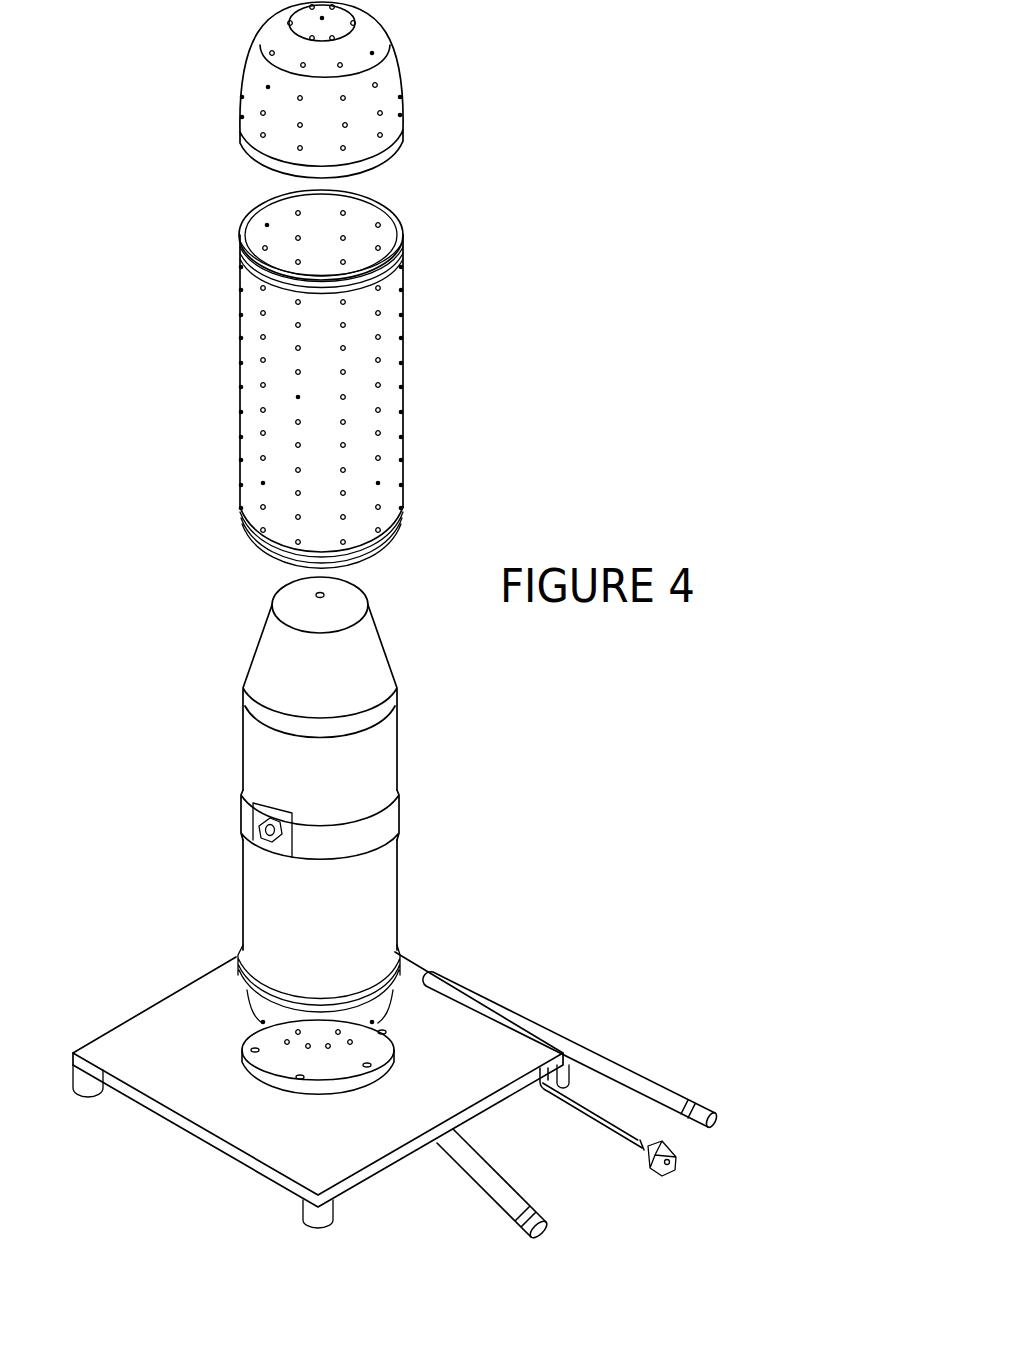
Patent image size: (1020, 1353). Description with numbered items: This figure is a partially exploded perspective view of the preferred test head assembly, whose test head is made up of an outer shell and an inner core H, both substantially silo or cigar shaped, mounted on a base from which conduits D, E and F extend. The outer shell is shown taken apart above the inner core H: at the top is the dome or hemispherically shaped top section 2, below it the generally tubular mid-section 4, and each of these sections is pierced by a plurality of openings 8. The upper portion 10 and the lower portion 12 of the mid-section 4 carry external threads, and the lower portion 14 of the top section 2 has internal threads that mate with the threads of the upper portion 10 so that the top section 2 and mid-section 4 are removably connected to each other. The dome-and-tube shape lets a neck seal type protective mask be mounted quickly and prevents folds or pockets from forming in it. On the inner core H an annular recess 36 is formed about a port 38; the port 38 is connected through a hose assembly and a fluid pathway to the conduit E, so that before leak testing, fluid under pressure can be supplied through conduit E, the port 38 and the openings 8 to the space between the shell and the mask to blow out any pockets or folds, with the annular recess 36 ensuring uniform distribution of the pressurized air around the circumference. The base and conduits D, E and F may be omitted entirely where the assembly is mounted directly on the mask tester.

The top section 2 is at (403, 82).
The mid-section 4 is at (403, 352).
The openings 8 is at (268, 87).
The upper portion 10 is at (398, 221).
The lower portion 12 is at (250, 543).
The lower portion 14 is at (403, 143).
The annular recess 36 is at (382, 821).
The port 38 is at (262, 829).
The inner core H is at (397, 736).
The conduit D is at (683, 1086).
The conduit E is at (684, 1173).
The conduit F is at (566, 1248).